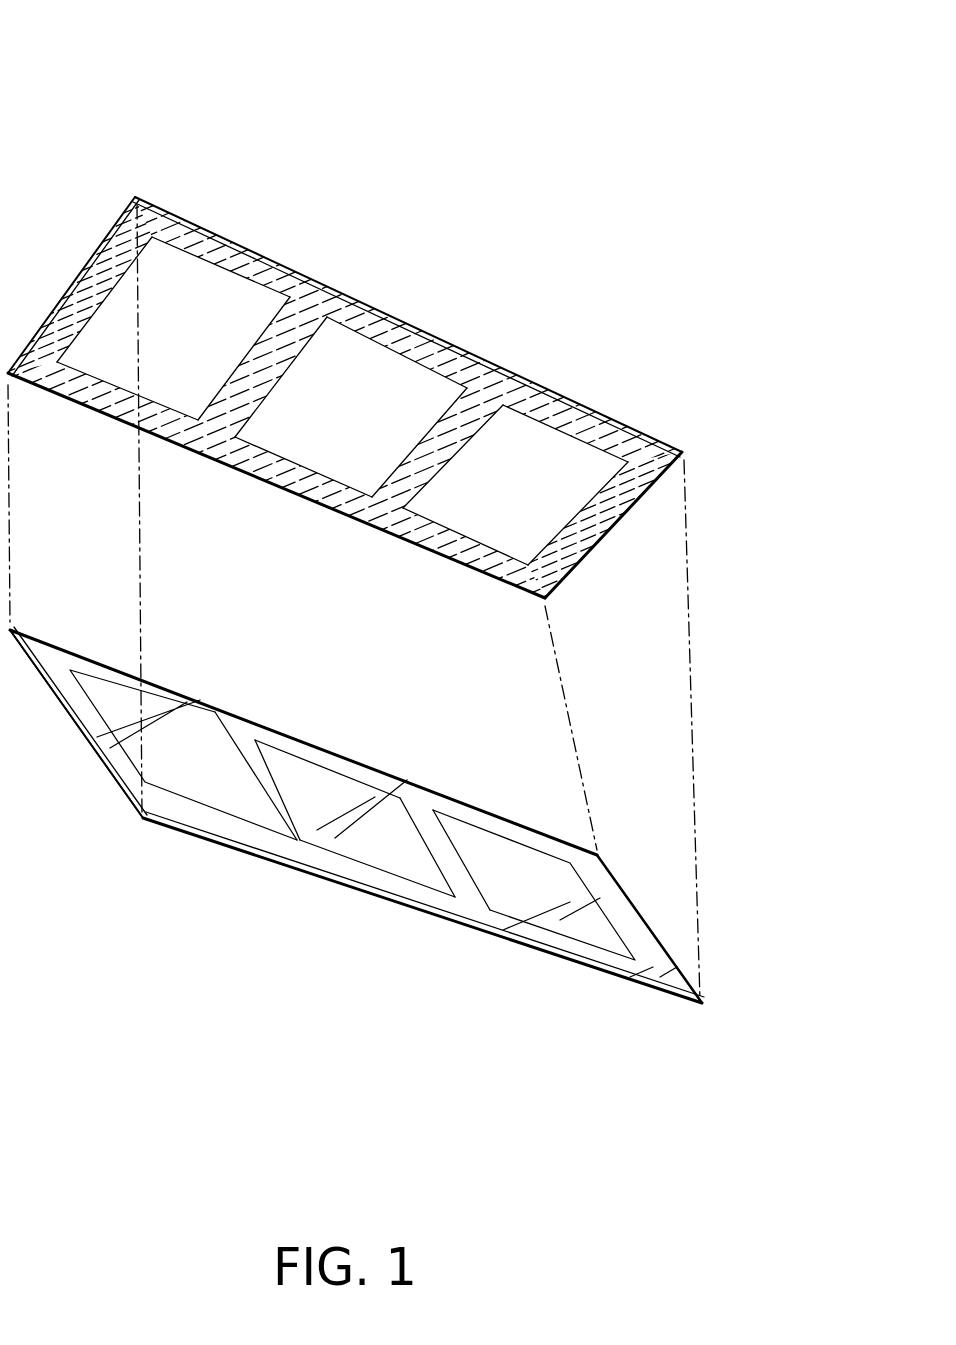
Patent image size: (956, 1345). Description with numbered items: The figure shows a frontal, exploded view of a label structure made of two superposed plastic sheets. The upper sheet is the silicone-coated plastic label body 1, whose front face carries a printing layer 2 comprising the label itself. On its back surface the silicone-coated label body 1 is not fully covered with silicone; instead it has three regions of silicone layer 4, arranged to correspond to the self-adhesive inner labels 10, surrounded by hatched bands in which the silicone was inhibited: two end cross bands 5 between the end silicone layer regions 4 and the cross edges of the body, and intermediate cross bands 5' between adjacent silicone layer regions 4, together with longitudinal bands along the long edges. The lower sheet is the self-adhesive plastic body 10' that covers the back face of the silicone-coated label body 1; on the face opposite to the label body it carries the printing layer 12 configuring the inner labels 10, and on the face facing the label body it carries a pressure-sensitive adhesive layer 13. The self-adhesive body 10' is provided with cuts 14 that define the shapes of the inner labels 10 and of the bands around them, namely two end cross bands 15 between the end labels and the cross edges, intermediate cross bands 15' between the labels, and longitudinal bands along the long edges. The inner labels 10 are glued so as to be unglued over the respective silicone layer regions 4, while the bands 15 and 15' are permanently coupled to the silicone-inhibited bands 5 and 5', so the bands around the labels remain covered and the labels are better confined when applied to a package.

The silicone-coated plastic label body 1 is at (328, 262).
The printing layer 2 is at (138, 200).
The silicone layer regions 4 is at (230, 315).
The end cross bands 5 is at (345, 301).
The intermediate cross band 5' is at (350, 256).
The self-adhesive inner labels 10 is at (356, 870).
The self-adhesive plastic body 10' is at (425, 961).
The printing layer 12 is at (228, 848).
The pressure-sensitive adhesive layer 13 is at (253, 842).
The cuts 14 is at (165, 792).
The end cross bands 15 is at (356, 868).
The intermediate cross band 15' is at (377, 911).